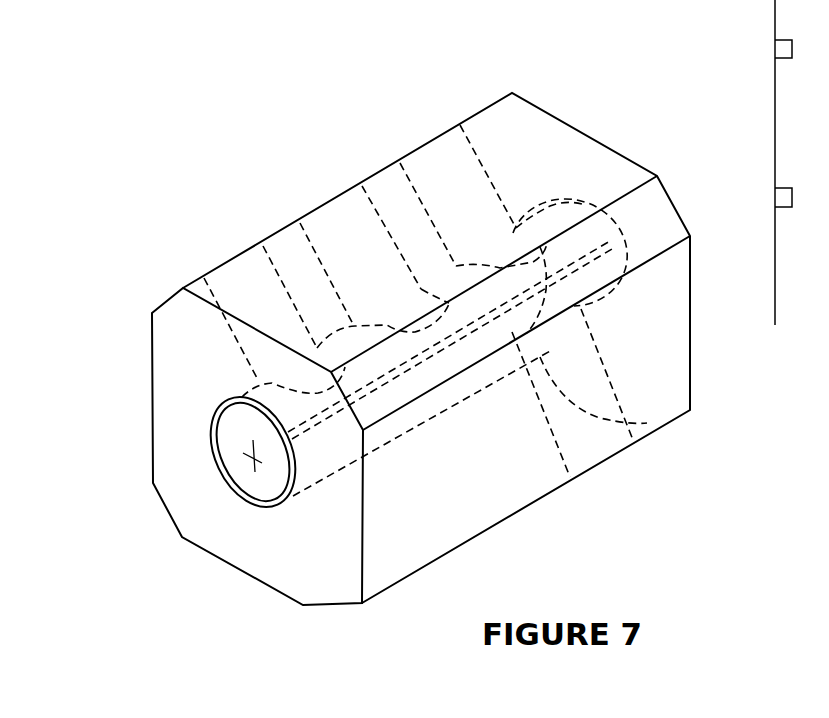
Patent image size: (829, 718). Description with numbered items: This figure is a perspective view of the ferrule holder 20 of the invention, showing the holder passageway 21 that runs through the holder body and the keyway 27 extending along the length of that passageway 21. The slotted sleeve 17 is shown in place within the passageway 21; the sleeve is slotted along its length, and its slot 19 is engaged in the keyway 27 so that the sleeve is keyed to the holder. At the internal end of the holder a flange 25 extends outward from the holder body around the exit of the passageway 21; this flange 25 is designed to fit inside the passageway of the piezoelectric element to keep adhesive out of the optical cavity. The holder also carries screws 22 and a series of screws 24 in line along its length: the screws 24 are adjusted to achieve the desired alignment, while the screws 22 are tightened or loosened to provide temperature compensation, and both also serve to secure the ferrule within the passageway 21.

The ferrule holder 20 is at (97, 222).
The slotted sleeve 17 is at (216, 424).
The slot 19 is at (325, 416).
The holder passageway 21 is at (240, 497).
The screws 22 is at (432, 130).
The screws 24 is at (228, 262).
The flange 25 is at (775, 201).
The keyway 27 is at (292, 436).